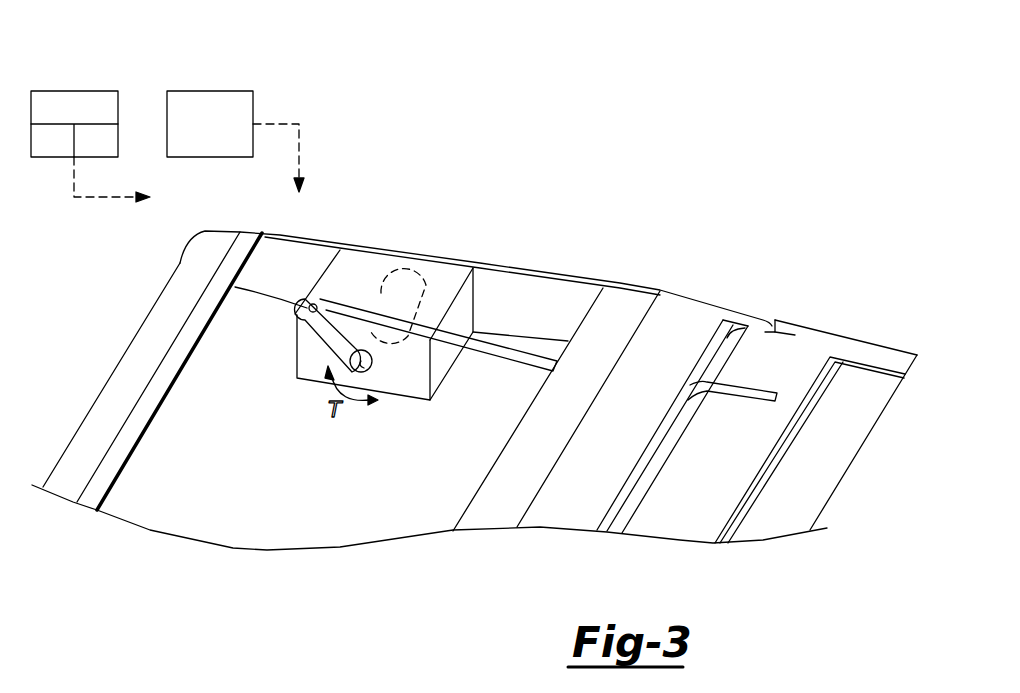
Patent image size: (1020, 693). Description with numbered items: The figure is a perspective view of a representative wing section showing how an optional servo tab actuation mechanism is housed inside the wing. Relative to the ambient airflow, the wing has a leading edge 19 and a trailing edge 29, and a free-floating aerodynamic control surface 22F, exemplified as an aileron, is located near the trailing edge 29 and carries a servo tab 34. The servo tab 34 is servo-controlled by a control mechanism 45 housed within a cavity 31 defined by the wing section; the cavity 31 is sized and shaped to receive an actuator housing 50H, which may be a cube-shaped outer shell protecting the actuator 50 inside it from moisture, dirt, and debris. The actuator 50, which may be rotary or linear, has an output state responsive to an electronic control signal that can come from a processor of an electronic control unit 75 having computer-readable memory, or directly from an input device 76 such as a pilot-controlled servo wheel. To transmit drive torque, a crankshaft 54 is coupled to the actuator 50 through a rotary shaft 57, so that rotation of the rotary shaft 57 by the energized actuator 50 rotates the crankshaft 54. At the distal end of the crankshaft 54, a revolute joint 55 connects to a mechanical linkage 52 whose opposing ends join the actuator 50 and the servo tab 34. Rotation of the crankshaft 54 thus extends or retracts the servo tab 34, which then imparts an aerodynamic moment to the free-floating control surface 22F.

The leading edge 19 is at (108, 378).
The free-floating aerodynamic control surface 22F is at (805, 350).
The trailing edge 29 is at (882, 418).
The cavity 31 is at (236, 339).
The servo tab 34 is at (828, 463).
The control mechanism 45 is at (428, 211).
The actuator 50 is at (393, 265).
The actuator housing 50H is at (440, 283).
The mechanical linkage 52 is at (497, 350).
The crankshaft 54 is at (330, 324).
The revolute joint 55 is at (302, 312).
The rotary shaft 57 is at (365, 383).
The electronic control unit 75 is at (74, 91).
The input device 76 is at (262, 141).